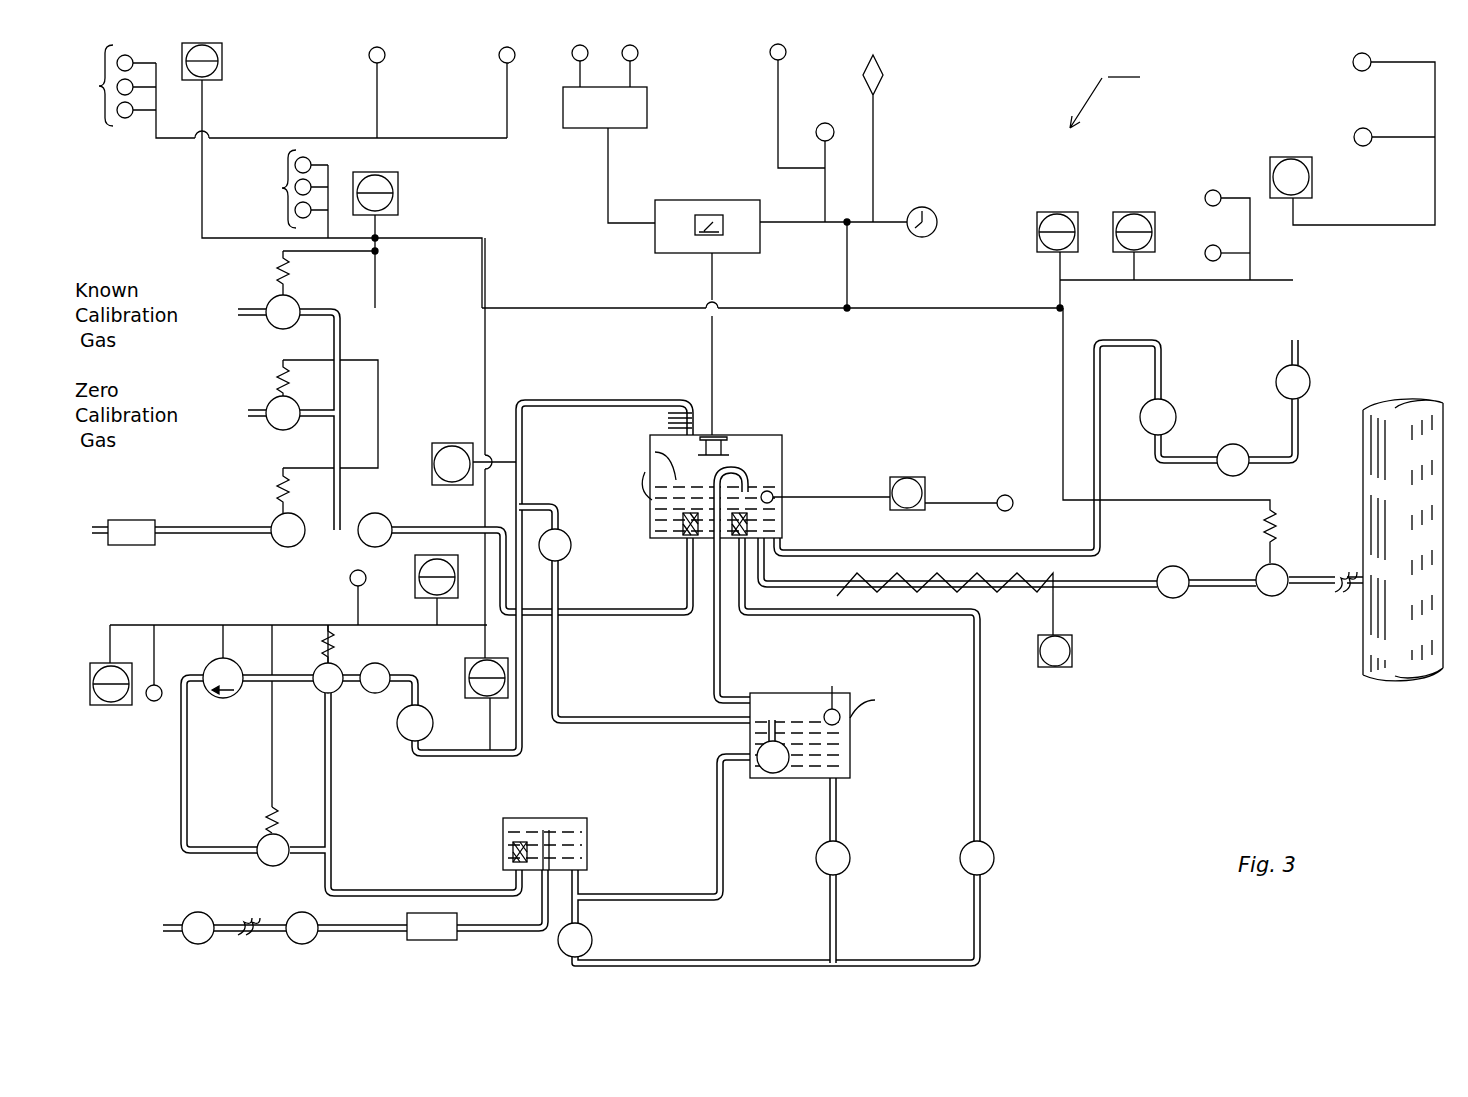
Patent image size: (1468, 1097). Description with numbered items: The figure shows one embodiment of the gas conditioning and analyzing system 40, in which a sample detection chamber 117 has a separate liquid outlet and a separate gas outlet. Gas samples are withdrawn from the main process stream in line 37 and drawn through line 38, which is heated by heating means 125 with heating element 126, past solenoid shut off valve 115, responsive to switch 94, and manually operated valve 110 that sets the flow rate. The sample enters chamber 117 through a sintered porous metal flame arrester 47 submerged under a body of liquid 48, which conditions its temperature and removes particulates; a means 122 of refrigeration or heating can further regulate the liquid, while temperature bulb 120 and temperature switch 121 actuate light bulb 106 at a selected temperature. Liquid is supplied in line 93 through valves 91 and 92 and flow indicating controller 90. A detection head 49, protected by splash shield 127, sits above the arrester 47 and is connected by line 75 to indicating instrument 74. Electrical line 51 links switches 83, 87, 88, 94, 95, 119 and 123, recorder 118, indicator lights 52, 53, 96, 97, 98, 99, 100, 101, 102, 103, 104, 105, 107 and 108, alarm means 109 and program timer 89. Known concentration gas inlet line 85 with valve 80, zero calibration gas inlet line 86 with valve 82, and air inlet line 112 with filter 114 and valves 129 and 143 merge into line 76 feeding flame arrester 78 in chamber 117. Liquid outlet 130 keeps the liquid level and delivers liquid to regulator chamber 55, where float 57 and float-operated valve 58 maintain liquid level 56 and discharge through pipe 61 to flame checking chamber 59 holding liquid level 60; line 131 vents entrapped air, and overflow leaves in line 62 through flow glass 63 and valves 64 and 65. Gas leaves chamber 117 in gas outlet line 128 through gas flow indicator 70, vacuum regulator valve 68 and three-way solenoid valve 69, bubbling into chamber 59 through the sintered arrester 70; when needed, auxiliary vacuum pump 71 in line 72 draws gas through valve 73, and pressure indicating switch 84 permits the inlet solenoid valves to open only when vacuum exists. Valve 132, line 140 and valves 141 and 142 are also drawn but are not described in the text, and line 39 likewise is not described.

The line 37 is at (1358, 488).
The line 38 is at (1310, 590).
The water supply line 39 is at (165, 926).
The gas conditioning and analyzing system 40 is at (1105, 91).
The sintered porous metal flame arrester 47 is at (755, 529).
The liquid 48 is at (655, 452).
The detection head 49 is at (716, 432).
The electrical line 51 is at (575, 306).
The indicator lights 52 is at (112, 85).
The indicator lights 53 is at (284, 189).
The regulator chamber 55 is at (852, 756).
The liquid level 56 is at (848, 708).
The float 57 is at (831, 682).
The float-operated valve 58 is at (768, 773).
The flame checking chamber 59 is at (588, 840).
The liquid level 60 is at (566, 828).
The pipe 61 is at (678, 895).
The line 62 is at (515, 940).
The flow glass 63 is at (457, 918).
The valve 64 is at (300, 912).
The valve 65 is at (200, 912).
The regulator valve 68 is at (365, 695).
The solenoid operated valve 69 is at (320, 692).
The gas flow indicator 70 is at (425, 708).
The vacuum pump 71 is at (226, 698).
The line 72 is at (448, 443).
The valve 73 is at (282, 840).
The indicating instrument 74 is at (676, 200).
The line 75 is at (706, 283).
The line 76 is at (445, 528).
The flame arrester 78 is at (680, 538).
The valve 80 is at (296, 302).
The valve 82 is at (272, 426).
The switch 83 is at (415, 590).
The pressure indicating switch 84 is at (470, 698).
The gas inlet line 85 is at (248, 305).
The gas inlet line 86 is at (260, 405).
The control switch 87 is at (398, 184).
The control switch 88 is at (222, 62).
The program timer 89 is at (924, 207).
The flow indicating controller 90 is at (851, 860).
The valve 91 is at (1233, 444).
The valve 92 is at (1308, 372).
The line 93 is at (1099, 487).
The switch 94 is at (1054, 212).
The switch 95 is at (1134, 212).
The indicator light 96 is at (368, 61).
The indicator light 97 is at (497, 61).
The indicator light 98 is at (571, 60).
The indicator light 99 is at (640, 56).
The indicator light 100 is at (770, 62).
The indicator light 101 is at (820, 123).
The indicator light 102 is at (1210, 190).
The indicator light 103 is at (1205, 258).
The indicator light 104 is at (1363, 146).
The indicator light 105 is at (1352, 68).
The light bulb 106 is at (1006, 494).
The indicator light 107 is at (350, 586).
The indicator light 108 is at (152, 702).
The alarm means 109 is at (883, 68).
The manually operated valve 110 is at (1182, 566).
The air inlet line 112 is at (170, 528).
The filter 114 is at (128, 546).
The solenoid shut off valve 115 is at (1284, 566).
The sample detection chamber 117 is at (782, 444).
The recorder 118 is at (647, 110).
The switch 119 is at (1288, 157).
The liquid filled temperature bulb 120 is at (775, 492).
The temperature switch 121 is at (907, 477).
The means of refrigeration or heating 122 is at (645, 490).
The switch 123 is at (110, 705).
The heating means 125 is at (1074, 642).
The heating element 126 is at (1010, 590).
The splash shield 127 is at (740, 443).
The gas outlet line 128 is at (625, 400).
The valve 129 is at (272, 518).
The liquid outlet 130 is at (722, 640).
The line 131 is at (660, 726).
The valve 132 is at (570, 560).
The line 140 is at (980, 733).
The valve 141 is at (995, 856).
The valve 142 is at (593, 935).
The valve 143 is at (385, 506).